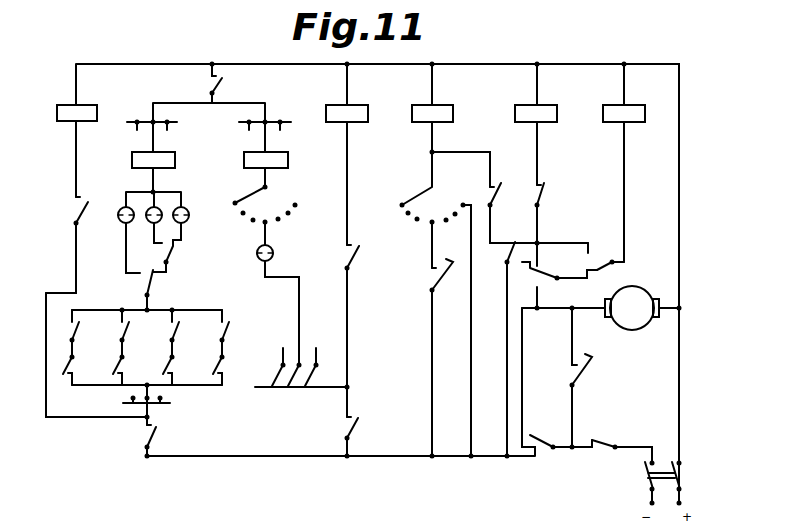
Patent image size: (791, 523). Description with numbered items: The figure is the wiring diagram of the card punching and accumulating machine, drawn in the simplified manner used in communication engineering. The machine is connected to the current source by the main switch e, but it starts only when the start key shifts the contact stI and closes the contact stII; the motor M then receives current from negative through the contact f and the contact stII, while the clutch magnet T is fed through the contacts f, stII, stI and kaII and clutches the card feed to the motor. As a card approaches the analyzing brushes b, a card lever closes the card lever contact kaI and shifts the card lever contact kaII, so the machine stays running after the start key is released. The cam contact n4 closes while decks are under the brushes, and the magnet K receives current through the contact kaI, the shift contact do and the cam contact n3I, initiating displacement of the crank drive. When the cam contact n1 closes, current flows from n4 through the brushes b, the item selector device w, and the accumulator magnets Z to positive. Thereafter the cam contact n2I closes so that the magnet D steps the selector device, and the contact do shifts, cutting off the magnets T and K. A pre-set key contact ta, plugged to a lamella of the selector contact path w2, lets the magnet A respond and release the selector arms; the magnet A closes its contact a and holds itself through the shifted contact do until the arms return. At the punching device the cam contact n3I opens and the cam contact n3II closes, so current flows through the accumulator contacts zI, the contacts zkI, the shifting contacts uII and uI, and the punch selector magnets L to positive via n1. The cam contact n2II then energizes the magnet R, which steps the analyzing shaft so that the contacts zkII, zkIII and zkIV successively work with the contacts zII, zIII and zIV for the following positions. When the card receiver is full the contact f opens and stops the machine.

The magnet R is at (83, 151).
The cam contact n1 is at (209, 108).
The punch selector magnets L is at (165, 187).
The magnet Z of the accumulator Z is at (286, 169).
The item selector device w is at (251, 195).
The item selector device w2 is at (420, 195).
The shifting contacts uI is at (181, 248).
The shifting contacts uII is at (158, 266).
The cam contact n2II is at (74, 245).
The contacts zkI is at (84, 335).
The contacts zkII is at (135, 335).
The contacts zkIII is at (186, 335).
The contacts zkIV is at (245, 335).
The contacts zI is at (75, 371).
The contacts zII is at (126, 371).
The contacts zIII is at (178, 371).
The contacts zIV is at (237, 371).
The cam contact n3II is at (159, 440).
The magnet D is at (354, 154).
The cam contact n2I is at (359, 331).
The cam contact n4 is at (360, 436).
The analyzing brushes b is at (301, 356).
The magnet A is at (451, 125).
The key contact ta is at (425, 357).
The contact a is at (538, 213).
The shift contact do is at (504, 339).
The magnet K is at (543, 124).
The cam contact n3I is at (547, 214).
The start key contact stI is at (559, 262).
The card lever contact kaII is at (606, 256).
The clutch magnet T is at (631, 163).
The motor M is at (642, 308).
The start key contact stII is at (585, 379).
The card lever contact kaI is at (561, 435).
The contact f is at (622, 440).
The main switch e is at (656, 483).